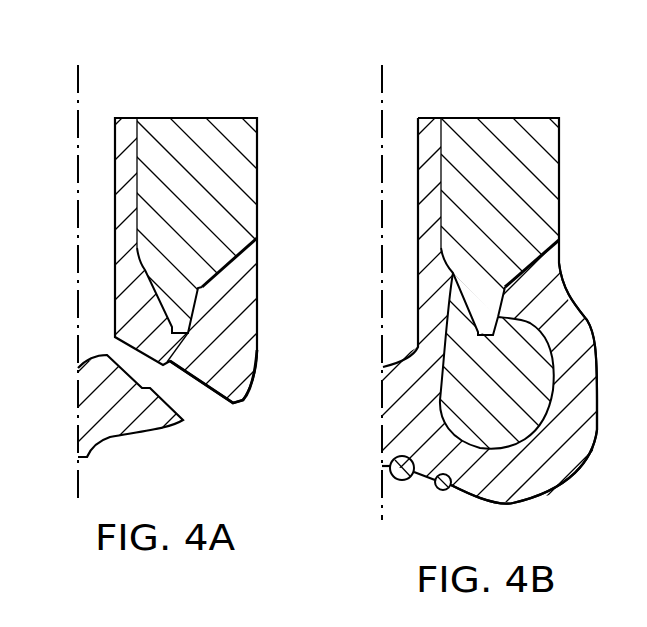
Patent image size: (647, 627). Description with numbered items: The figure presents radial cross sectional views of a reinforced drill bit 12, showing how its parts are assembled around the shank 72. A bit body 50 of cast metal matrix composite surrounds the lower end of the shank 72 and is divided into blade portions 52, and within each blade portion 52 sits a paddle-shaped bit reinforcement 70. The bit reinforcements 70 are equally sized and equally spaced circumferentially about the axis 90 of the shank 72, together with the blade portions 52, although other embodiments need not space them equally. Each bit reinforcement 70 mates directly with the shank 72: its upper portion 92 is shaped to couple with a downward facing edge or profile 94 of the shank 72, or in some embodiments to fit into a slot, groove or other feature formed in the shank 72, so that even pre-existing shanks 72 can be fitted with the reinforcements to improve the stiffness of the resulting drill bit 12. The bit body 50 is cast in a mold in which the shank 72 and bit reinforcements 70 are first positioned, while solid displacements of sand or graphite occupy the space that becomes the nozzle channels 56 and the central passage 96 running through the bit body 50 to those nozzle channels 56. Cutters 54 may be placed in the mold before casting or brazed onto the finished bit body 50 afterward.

In FIG. 4A, the drill bit 12 is at (211, 272).
In FIG. 4B, the drill bit 12 is at (514, 313).
In FIG. 4A, the bit body 50 is at (262, 260).
In FIG. 4B, the bit body 50 is at (565, 262).
In FIG. 4B, the blade portion 52 is at (583, 410).
In FIG. 4B, the cutter 54 is at (392, 480).
In FIG. 4A, the nozzle channel 56 is at (213, 400).
In FIG. 4B, the bit reinforcement 70 is at (527, 428).
In FIG. 4A, the shank 72 is at (197, 125).
In FIG. 4B, the shank 72 is at (500, 125).
In FIG. 4A, the axis 90 is at (78, 140).
In FIG. 4B, the axis 90 is at (381, 140).
In FIG. 4B, the upper portion 92 is at (493, 345).
In FIG. 4A, the downward facing edge or profile 94 is at (195, 322).
In FIG. 4B, the downward facing edge or profile 94 is at (500, 315).
In FIG. 4A, the central passage 96 is at (99, 135).
In FIG. 4B, the central passage 96 is at (402, 135).